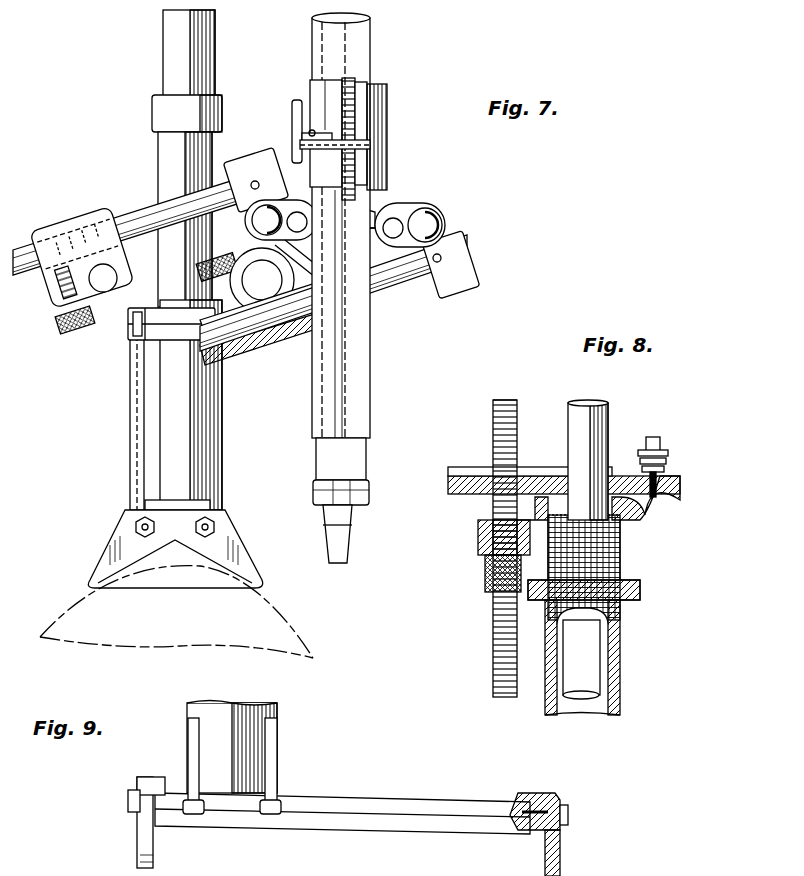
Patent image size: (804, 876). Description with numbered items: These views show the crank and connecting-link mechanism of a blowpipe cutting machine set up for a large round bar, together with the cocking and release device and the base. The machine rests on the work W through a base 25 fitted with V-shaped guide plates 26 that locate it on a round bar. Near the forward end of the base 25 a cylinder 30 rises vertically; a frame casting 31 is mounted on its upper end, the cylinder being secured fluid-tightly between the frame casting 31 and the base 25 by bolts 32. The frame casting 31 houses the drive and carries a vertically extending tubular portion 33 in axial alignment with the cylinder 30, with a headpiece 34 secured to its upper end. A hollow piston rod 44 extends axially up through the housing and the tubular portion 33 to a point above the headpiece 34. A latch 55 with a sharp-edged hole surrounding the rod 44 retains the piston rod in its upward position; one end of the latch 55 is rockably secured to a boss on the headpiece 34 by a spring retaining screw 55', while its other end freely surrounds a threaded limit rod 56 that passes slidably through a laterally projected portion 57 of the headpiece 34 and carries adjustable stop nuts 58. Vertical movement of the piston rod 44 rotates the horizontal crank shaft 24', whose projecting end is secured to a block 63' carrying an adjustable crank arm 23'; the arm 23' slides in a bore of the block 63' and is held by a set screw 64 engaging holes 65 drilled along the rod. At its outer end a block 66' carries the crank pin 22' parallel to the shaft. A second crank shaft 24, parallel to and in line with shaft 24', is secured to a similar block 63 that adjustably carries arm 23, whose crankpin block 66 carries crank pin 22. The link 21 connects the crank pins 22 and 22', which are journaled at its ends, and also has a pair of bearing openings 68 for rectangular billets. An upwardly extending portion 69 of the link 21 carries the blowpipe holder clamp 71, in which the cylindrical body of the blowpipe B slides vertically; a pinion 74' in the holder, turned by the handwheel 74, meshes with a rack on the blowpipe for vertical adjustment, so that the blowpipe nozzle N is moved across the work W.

In FIG. 7, the tubular portion 33 is at (170, 52).
In FIG. 8, the tubular portion 33 is at (620, 672).
In FIG. 7, the frame casting 31 is at (168, 148).
In FIG. 7, the cylinder 30 is at (158, 392).
In FIG. 9, the cylinder 30 is at (228, 720).
In FIG. 7, the bolts 32 is at (132, 440).
In FIG. 9, the bolts 32 is at (188, 748).
In FIG. 7, the crank arm 23 is at (144, 220).
In FIG. 7, the crank arm 23' is at (333, 293).
In FIG. 7, the block 63 is at (82, 239).
In FIG. 7, the block 63' is at (280, 336).
In FIG. 7, the set screw 64 is at (58, 318).
In FIG. 7, the holes 65 is at (283, 352).
In FIG. 7, the crankpin block 66 is at (255, 163).
In FIG. 7, the block 66' is at (469, 269).
In FIG. 7, the crank shaft 24 is at (101, 309).
In FIG. 7, the crank shaft 24' is at (262, 270).
In FIG. 7, the crank pin 22 is at (266, 220).
In FIG. 7, the crank pin 22' is at (456, 213).
In FIG. 7, the bearing openings 68 is at (305, 226).
In FIG. 7, the upwardly extending portion 69 is at (355, 208).
In FIG. 7, the link 21 is at (405, 208).
In FIG. 7, the blowpipe holder clamp 71 is at (385, 103).
In FIG. 7, the handwheel 74 is at (307, 112).
In FIG. 7, the pinion 74' is at (372, 132).
In FIG. 7, the cutting blowpipe B is at (370, 360).
In FIG. 7, the blowpipe nozzle N is at (340, 540).
In FIG. 7, the guide plates 26 is at (115, 548).
In FIG. 9, the guide plates 26 is at (140, 838).
In FIG. 7, the work W is at (78, 617).
In FIG. 8, the piston rod 44 is at (605, 410).
In FIG. 8, the latch 55 is at (594, 473).
In FIG. 8, the spring retaining screw 55' is at (686, 453).
In FIG. 8, the laterally projected portion 57 is at (478, 535).
In FIG. 8, the stop nuts 58 is at (485, 588).
In FIG. 8, the limit rod 56 is at (490, 632).
In FIG. 8, the headpiece 34 is at (645, 560).
In FIG. 9, the base 25 is at (353, 818).